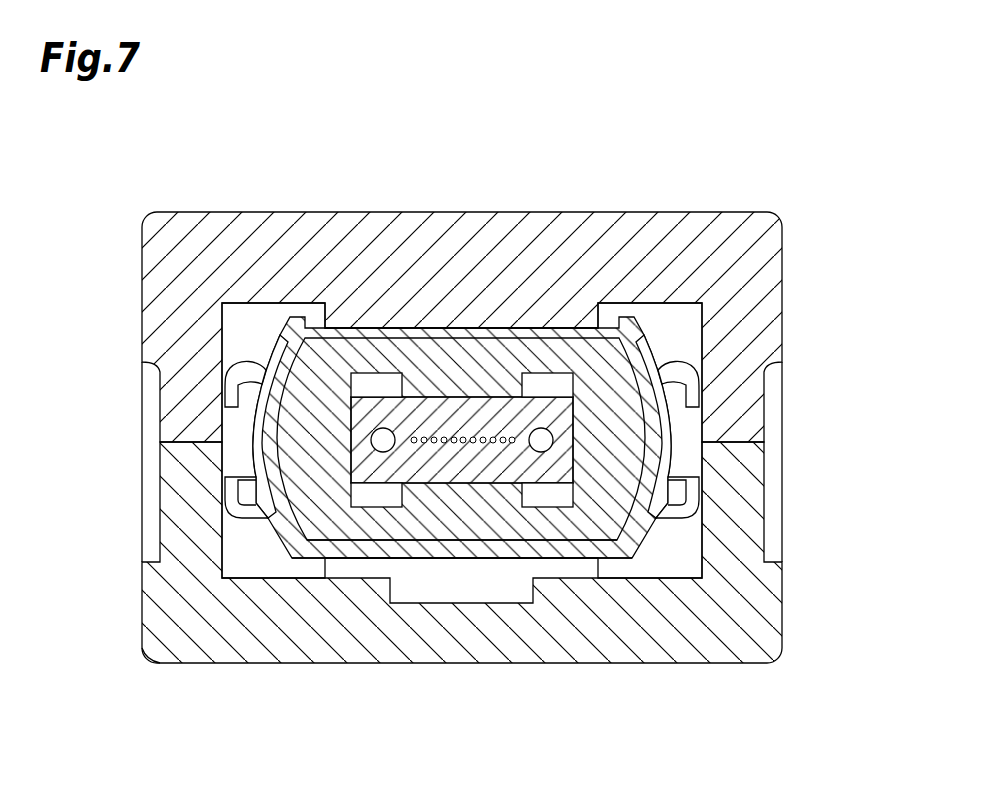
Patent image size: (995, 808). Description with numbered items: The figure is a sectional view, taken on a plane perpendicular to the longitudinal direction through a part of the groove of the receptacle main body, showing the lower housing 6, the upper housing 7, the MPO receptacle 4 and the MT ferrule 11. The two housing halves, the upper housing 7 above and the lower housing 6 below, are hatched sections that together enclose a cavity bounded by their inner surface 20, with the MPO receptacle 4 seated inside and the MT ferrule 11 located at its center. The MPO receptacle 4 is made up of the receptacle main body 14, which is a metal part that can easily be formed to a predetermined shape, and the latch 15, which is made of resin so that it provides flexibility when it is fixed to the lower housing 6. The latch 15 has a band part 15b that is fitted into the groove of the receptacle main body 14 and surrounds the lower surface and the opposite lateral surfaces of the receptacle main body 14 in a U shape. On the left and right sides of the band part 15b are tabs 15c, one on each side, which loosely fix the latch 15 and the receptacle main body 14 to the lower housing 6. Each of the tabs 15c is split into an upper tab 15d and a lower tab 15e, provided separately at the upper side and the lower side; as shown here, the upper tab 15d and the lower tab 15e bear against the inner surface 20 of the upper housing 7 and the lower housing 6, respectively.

The MPO receptacle 4 is at (463, 468).
The lower housing 6 is at (750, 598).
The upper housing 7 is at (767, 285).
The MT ferrule 11 is at (483, 415).
The receptacle main body 14 is at (507, 540).
The latch 15 is at (380, 556).
The band part 15b is at (583, 548).
The tabs 15c is at (95, 385).
The upper tab 15d is at (232, 395).
The lower tab 15e is at (232, 485).
The inner surface 20 is at (692, 340).